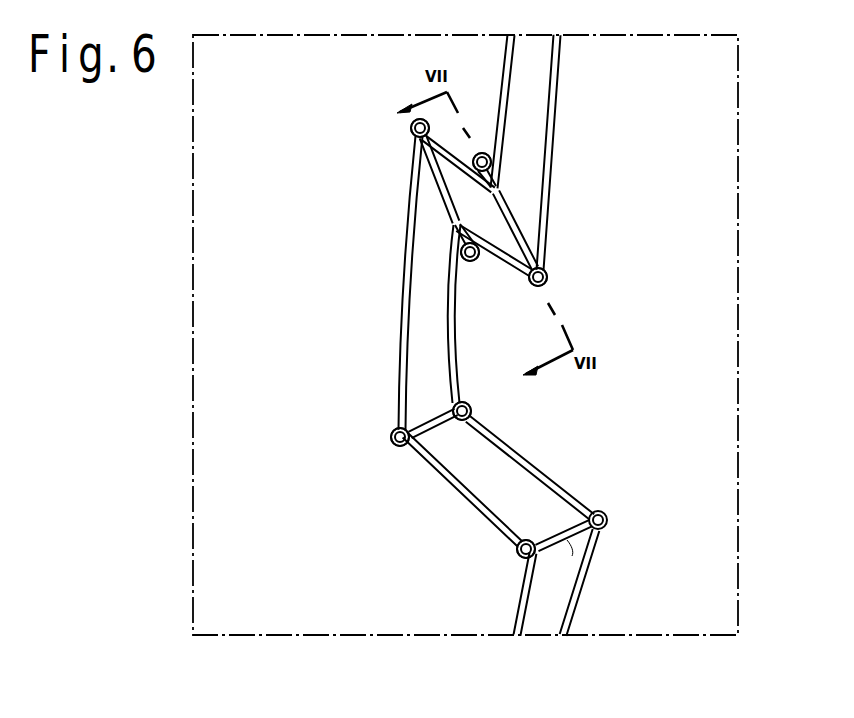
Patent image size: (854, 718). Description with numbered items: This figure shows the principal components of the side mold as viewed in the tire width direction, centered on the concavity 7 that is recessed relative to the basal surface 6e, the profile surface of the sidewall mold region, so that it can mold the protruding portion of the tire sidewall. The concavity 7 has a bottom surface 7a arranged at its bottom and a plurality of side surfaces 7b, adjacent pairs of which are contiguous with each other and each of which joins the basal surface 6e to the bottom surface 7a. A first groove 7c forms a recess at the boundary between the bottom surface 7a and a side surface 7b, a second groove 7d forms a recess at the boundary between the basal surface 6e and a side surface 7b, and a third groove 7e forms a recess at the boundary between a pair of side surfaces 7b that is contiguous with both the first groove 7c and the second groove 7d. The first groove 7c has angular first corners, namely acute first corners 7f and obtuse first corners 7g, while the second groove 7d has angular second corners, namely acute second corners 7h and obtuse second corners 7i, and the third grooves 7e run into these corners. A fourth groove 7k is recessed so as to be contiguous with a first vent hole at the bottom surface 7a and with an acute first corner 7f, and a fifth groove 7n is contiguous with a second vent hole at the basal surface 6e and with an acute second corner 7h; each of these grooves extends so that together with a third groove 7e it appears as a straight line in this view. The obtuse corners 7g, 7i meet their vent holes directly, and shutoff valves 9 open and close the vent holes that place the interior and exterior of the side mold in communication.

The concavity 7 is at (222, 304).
The bottom surface 7a is at (217, 410).
The side surface 7b is at (537, 117).
The first groove 7c is at (401, 370).
The second groove 7d is at (553, 62).
The third groove 7e is at (441, 210).
The acute first corner 7f is at (540, 201).
The obtuse first corner 7g is at (418, 140).
The acute second corner 7h is at (449, 233).
The obtuse second corner 7i is at (547, 262).
The fourth groove 7k is at (500, 167).
The fifth groove 7n is at (443, 246).
The shutoff valve 9 is at (410, 130).
The basal surface 6e is at (714, 366).